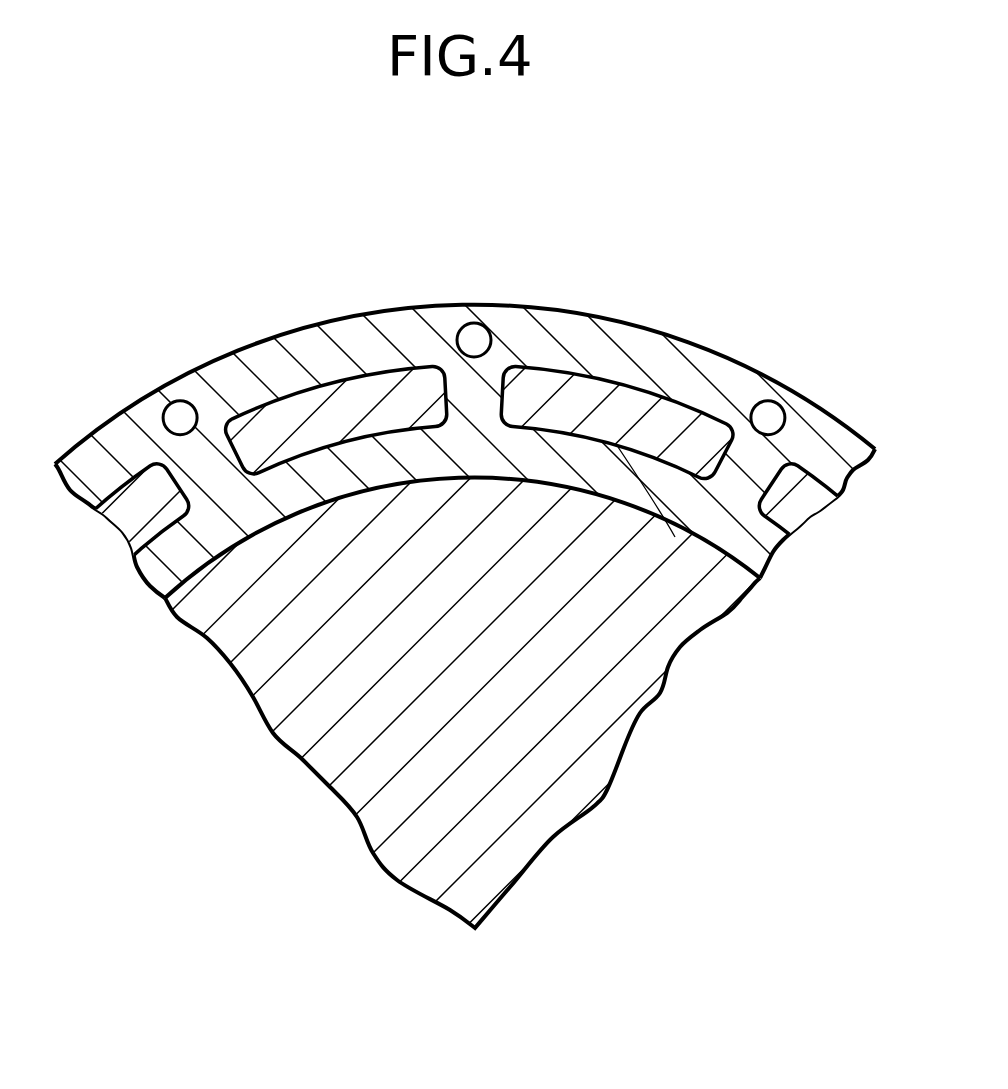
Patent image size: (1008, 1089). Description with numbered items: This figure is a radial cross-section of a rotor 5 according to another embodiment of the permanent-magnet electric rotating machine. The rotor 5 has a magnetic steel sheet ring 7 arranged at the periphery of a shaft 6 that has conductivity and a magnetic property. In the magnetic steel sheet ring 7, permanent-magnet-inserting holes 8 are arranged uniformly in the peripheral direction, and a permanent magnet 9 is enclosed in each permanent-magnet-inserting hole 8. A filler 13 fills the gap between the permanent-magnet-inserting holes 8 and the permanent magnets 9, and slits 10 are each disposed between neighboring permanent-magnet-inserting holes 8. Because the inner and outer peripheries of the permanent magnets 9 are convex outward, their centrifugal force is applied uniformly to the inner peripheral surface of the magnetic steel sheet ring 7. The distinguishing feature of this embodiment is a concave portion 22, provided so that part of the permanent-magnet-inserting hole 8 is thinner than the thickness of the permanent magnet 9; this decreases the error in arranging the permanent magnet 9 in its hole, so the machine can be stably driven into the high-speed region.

The rotor 5 is at (504, 544).
The shaft 6 is at (578, 675).
The magnetic steel sheet ring 7 is at (623, 337).
The permanent-magnet-inserting hole 8 is at (498, 365).
The permanent magnet 9 is at (807, 507).
The slit 10 is at (773, 413).
The filler 13 is at (447, 377).
The concave portion 22 is at (723, 610).